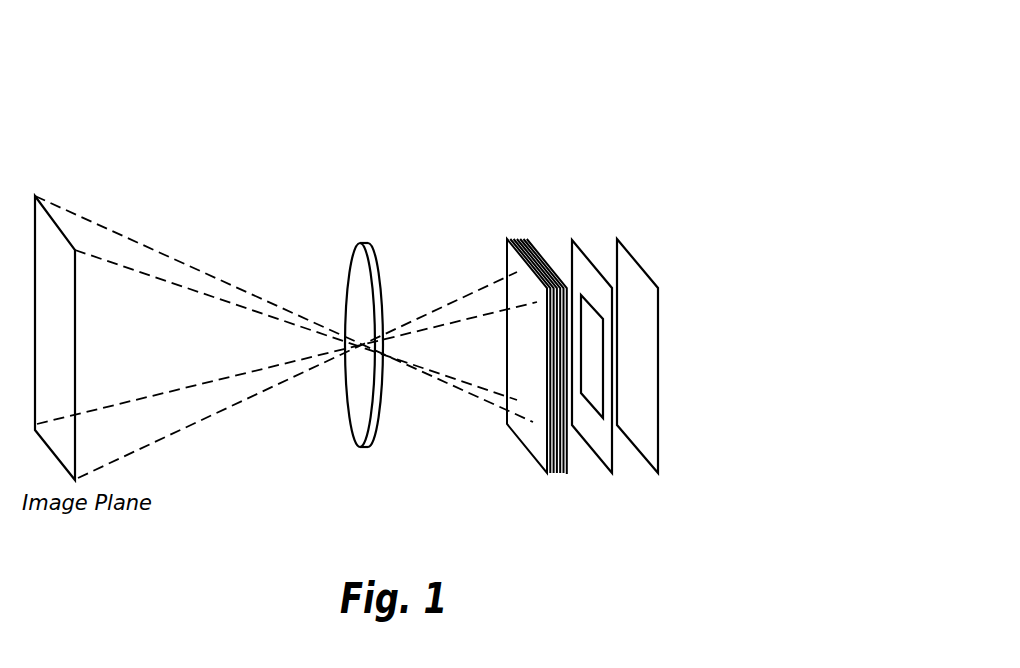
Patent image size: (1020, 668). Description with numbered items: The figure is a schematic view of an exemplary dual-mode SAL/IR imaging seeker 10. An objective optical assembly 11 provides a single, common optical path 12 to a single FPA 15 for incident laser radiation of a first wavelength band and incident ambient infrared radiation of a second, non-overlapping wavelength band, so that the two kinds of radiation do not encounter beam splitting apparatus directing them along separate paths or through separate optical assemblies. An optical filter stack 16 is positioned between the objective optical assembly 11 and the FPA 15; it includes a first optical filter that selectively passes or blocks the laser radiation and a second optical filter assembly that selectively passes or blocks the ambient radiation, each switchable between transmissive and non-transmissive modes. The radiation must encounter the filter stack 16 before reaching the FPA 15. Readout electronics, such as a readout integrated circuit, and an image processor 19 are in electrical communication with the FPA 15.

The dual-mode SAL/IR imaging seeker 10 is at (157, 91).
The objective optical assembly 11 is at (382, 250).
The common optical path 12 is at (485, 358).
The FPA 15 is at (602, 461).
The optical filter stack 16 is at (532, 246).
The readout electronics and image processor 19 is at (638, 262).